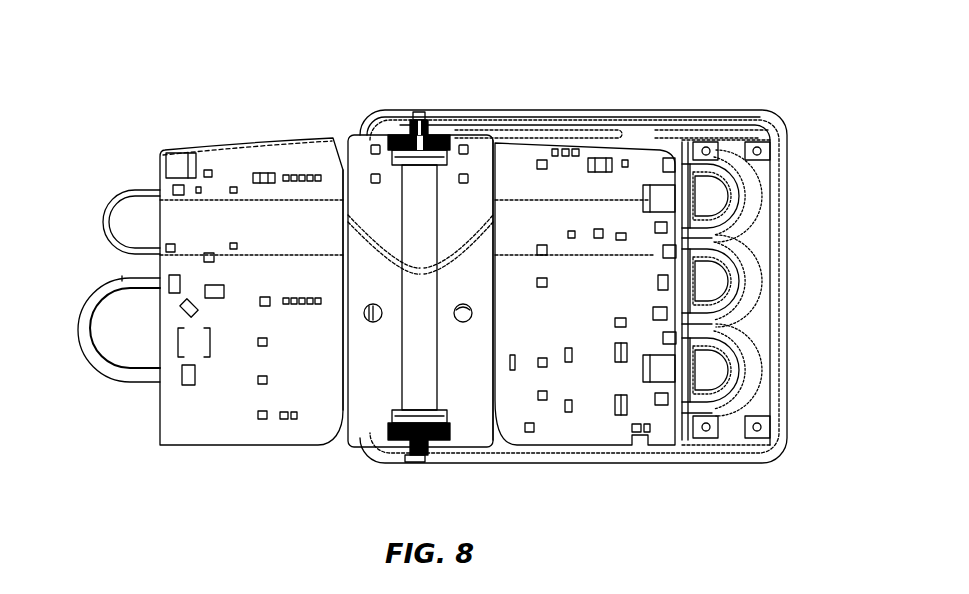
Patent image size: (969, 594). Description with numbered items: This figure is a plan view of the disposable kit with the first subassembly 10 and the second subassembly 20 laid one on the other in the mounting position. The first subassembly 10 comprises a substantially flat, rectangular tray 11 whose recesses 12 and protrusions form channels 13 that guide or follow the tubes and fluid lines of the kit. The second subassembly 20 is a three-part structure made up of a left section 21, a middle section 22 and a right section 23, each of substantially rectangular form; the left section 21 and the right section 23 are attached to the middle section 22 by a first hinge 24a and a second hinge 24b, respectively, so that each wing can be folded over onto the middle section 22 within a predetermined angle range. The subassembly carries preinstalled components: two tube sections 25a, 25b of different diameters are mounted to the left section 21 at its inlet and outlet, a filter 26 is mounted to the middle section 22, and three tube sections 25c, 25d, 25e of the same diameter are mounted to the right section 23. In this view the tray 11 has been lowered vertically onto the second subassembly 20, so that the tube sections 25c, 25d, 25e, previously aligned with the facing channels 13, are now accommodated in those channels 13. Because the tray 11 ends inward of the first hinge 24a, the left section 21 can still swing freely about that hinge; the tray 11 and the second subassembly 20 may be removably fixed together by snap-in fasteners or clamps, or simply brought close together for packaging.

The first subassembly 10 is at (807, 124).
The tray 11 is at (392, 115).
The recesses 12 is at (685, 135).
The channels 13 is at (752, 231).
The second subassembly 20 is at (184, 463).
The left section 21 is at (250, 138).
The middle section 22 is at (357, 150).
The right section 23 is at (533, 147).
The first hinge 24a is at (343, 430).
The second hinge 24b is at (493, 437).
The tube section 25a is at (137, 188).
The tube section 25b is at (123, 283).
The tube section 25c is at (742, 184).
The tube section 25d is at (742, 263).
The tube section 25e is at (736, 344).
The filter 26 is at (423, 205).